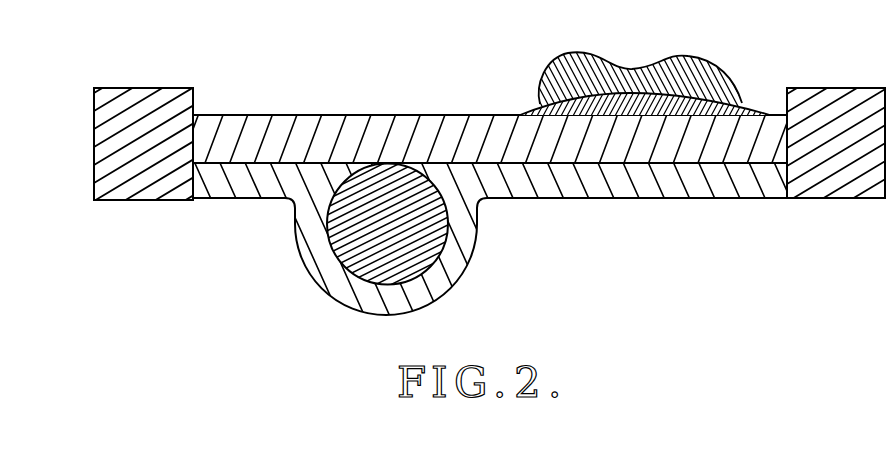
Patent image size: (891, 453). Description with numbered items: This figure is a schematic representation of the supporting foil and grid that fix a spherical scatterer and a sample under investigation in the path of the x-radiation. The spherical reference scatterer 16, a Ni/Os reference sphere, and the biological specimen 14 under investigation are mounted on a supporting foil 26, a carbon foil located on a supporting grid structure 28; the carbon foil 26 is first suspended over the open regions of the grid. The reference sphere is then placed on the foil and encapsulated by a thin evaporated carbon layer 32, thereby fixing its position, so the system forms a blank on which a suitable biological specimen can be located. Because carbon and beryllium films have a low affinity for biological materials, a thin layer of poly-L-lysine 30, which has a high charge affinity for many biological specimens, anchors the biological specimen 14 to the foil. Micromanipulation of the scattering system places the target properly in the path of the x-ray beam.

The biological specimen 14 is at (639, 67).
The spherical reference scatterer 16 is at (347, 224).
The supporting foil 26 is at (485, 108).
The supporting grid structure 28 is at (489, 136).
The poly-L-lysine layer 30 is at (652, 82).
The evaporated carbon layer 32 is at (506, 239).